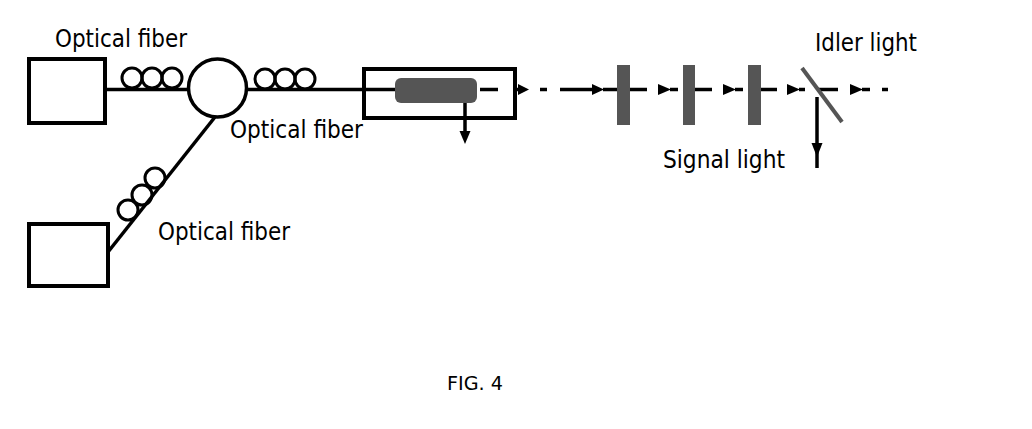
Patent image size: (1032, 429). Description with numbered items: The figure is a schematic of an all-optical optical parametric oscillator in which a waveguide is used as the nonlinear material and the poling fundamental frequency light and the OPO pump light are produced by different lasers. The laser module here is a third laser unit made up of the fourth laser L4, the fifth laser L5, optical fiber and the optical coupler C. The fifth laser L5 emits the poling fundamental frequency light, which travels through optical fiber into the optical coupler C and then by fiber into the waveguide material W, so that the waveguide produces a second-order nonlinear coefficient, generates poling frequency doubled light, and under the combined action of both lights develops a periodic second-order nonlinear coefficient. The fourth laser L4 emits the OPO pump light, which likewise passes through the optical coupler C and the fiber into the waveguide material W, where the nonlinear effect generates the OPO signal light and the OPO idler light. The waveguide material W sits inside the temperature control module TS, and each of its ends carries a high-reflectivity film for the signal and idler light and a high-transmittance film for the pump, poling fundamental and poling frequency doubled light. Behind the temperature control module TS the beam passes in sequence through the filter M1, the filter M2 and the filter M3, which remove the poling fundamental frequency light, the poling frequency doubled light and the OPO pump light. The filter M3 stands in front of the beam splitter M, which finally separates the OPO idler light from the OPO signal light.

The fourth laser L4 is at (61, 121).
The fifth laser L5 is at (68, 280).
The optical coupler C is at (218, 63).
The temperature control module TS is at (439, 63).
The waveguide material W is at (469, 152).
The filter M1 is at (632, 68).
The filter M2 is at (698, 68).
The filter M3 is at (763, 68).
The beam splitter M is at (841, 118).